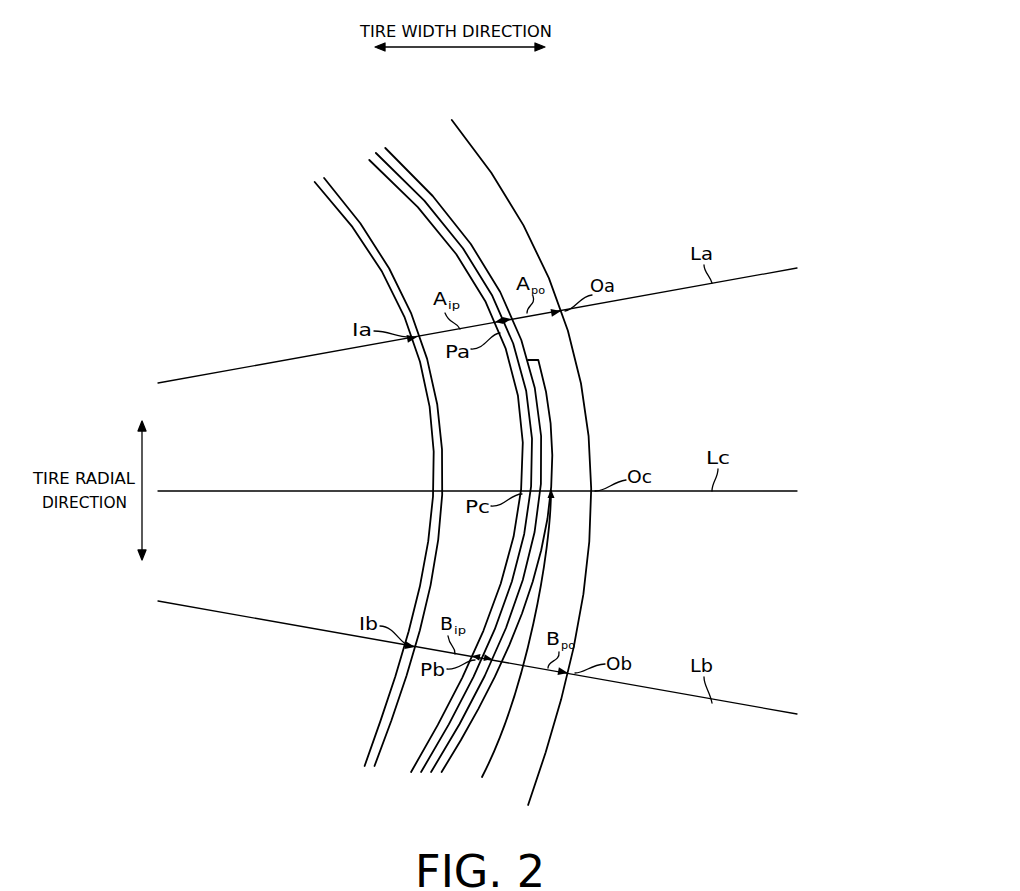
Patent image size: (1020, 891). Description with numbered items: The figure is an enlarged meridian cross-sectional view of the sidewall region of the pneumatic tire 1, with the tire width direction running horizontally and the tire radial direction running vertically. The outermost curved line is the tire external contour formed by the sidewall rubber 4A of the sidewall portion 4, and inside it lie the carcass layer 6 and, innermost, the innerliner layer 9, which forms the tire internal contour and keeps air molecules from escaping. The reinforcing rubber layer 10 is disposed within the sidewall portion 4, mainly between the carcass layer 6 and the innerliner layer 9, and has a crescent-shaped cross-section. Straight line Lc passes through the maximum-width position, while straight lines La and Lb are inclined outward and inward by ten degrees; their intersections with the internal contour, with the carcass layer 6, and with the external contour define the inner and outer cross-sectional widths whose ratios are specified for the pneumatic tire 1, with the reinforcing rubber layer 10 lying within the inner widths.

The pneumatic tire 1 is at (566, 118).
The sidewall portion 4 is at (592, 426).
The sidewall rubber 4A is at (521, 250).
The carcass layer 6 is at (453, 223).
The innerliner layer 9 is at (345, 205).
The reinforcing rubber layer 10 is at (420, 708).